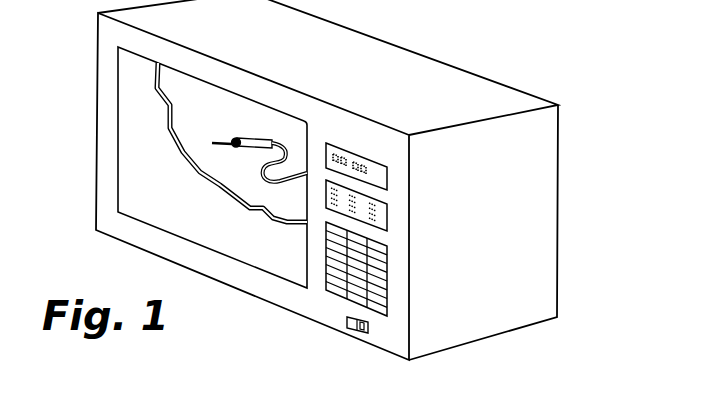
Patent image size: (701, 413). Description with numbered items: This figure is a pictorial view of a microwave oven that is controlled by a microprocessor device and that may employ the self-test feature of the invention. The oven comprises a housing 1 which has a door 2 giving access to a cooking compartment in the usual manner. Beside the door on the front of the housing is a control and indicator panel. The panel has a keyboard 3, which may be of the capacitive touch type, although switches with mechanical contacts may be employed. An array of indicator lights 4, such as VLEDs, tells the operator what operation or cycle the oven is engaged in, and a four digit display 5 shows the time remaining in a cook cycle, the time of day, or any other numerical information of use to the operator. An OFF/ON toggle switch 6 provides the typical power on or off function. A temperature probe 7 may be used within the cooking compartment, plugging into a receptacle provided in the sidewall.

The housing 1 is at (105, 38).
The door 2 is at (130, 164).
The keyboard 3 is at (333, 288).
The indicator lights 4 is at (383, 225).
The four digit display 5 is at (383, 178).
The OFF/ON toggle switch 6 is at (348, 328).
The temperature probe 7 is at (251, 137).